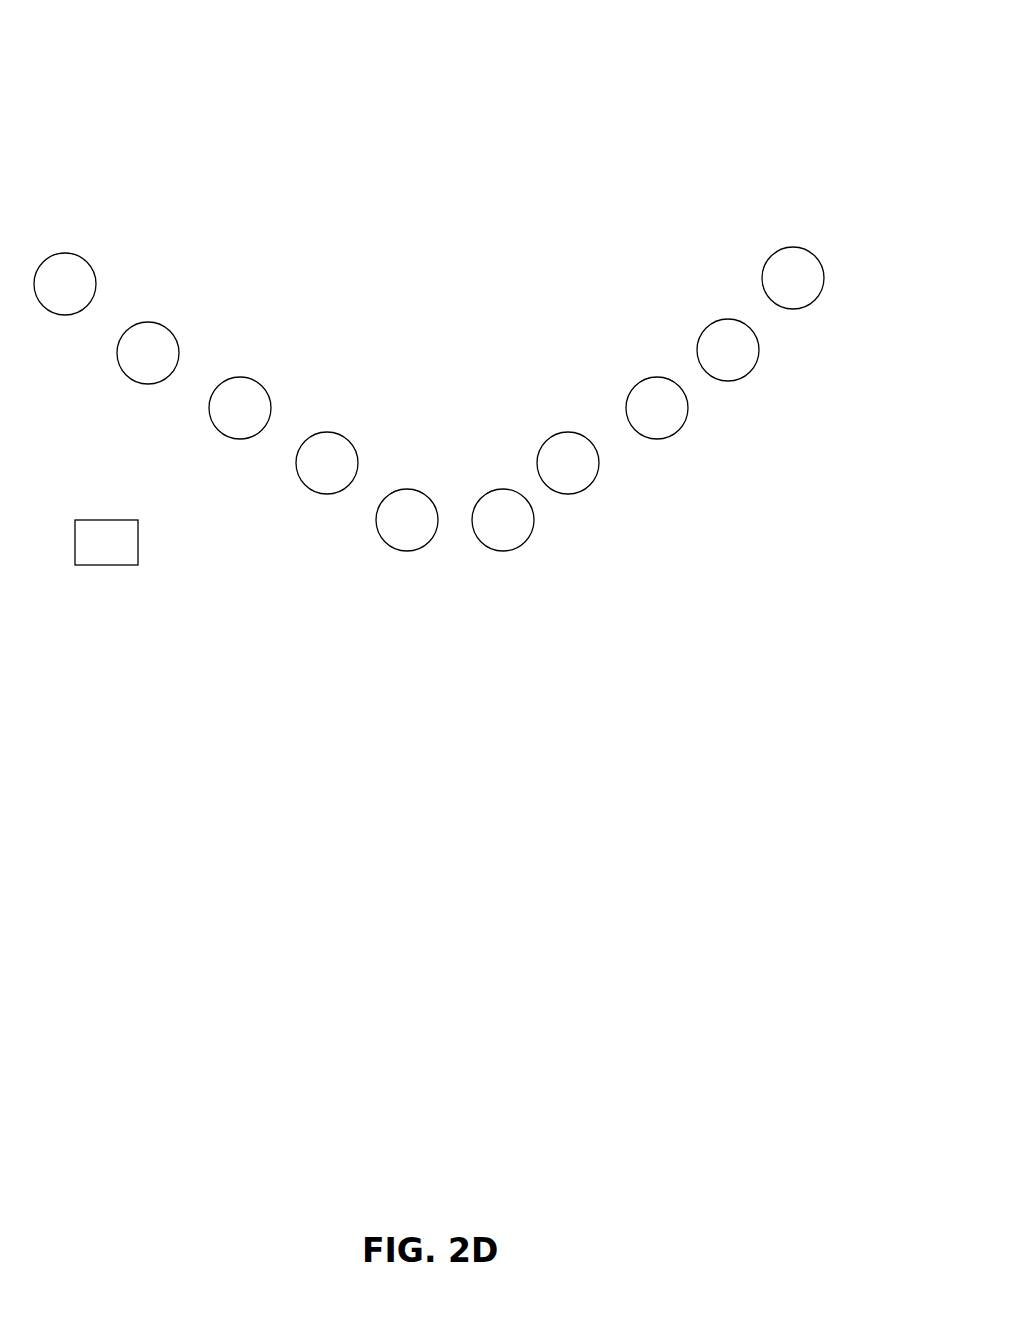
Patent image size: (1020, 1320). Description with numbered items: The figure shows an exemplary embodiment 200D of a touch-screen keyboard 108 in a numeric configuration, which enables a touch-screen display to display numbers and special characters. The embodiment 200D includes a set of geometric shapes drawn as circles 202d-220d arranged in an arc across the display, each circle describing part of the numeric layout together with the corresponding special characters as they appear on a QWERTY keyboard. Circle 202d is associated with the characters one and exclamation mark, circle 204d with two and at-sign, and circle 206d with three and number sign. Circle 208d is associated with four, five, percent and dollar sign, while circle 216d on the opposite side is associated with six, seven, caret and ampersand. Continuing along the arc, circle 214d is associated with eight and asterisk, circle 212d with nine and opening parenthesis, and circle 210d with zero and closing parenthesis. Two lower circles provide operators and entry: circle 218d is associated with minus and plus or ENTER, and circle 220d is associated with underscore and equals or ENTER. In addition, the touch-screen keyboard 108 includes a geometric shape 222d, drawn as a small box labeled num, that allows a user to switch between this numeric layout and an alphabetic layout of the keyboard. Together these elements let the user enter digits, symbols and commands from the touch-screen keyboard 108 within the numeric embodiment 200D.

The embodiment 200D is at (841, 26).
The circle 202d is at (87, 261).
The circle 204d is at (170, 331).
The circle 206d is at (263, 388).
The circle 208d is at (349, 441).
The circle 216d is at (538, 465).
The circle 214d is at (635, 382).
The circle 212d is at (707, 327).
The circle 210d is at (770, 252).
The circle 218d is at (380, 531).
The circle 220d is at (534, 520).
The geometric shape 222d is at (138, 540).
The touch-screen keyboard 108 is at (168, 595).